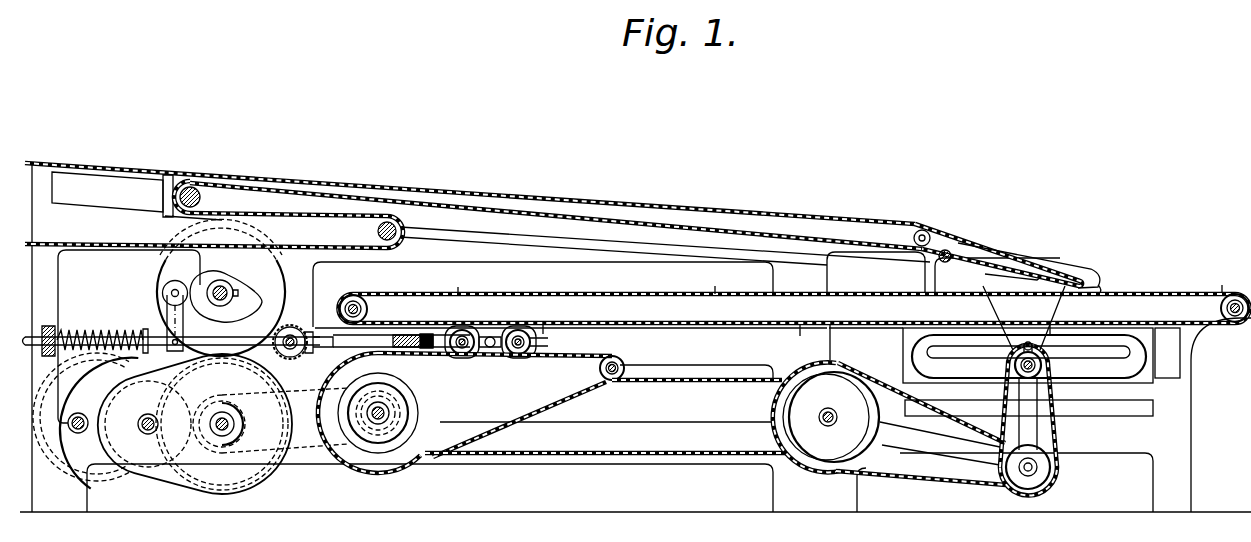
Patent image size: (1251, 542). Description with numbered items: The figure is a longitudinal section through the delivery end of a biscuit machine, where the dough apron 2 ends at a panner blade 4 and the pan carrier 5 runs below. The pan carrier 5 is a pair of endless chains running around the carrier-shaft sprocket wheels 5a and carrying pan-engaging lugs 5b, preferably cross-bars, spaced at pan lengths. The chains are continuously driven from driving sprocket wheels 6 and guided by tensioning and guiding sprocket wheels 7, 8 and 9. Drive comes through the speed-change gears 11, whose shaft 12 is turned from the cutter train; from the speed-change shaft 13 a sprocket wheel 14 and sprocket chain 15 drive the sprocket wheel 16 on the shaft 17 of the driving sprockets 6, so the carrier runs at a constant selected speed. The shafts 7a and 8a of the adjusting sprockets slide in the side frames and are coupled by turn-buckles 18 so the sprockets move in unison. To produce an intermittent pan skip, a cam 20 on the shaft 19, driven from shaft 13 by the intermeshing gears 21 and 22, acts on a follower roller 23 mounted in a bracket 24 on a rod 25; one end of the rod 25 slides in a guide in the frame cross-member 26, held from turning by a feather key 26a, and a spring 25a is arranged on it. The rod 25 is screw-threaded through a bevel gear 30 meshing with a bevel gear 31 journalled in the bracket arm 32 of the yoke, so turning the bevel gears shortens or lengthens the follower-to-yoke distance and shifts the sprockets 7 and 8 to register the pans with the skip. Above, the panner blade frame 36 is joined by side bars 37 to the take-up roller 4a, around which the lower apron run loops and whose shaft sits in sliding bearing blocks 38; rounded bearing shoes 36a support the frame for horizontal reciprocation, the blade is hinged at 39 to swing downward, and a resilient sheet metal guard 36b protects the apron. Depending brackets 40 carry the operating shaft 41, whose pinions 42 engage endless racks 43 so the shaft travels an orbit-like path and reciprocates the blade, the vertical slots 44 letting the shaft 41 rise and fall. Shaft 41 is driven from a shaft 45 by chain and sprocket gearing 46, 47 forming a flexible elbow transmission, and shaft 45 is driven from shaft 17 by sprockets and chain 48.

The dough apron 2 is at (98, 170).
The panner blade 4 is at (967, 243).
The take-up roller 4a is at (168, 214).
The pan carrier 5 is at (583, 294).
The carrier-shaft sprocket wheels 5a is at (368, 305).
The pan-engaging lugs 5b is at (460, 291).
The driving sprocket wheels 6 is at (375, 458).
The tensioning and guiding sprocket wheel 7 is at (464, 336).
The sprocket shaft 7a is at (460, 358).
The tensioning and guiding sprocket wheel 8 is at (524, 336).
The sprocket shaft 8a is at (514, 358).
The tensioning and guiding sprocket wheel 9 is at (630, 350).
The speed-change gears 11 is at (148, 482).
The shaft of the speed-change gears 12 is at (140, 426).
The shaft of the speed-change gears 13 is at (218, 430).
The sprocket wheel 14 is at (240, 418).
The sprocket chain 15 is at (288, 465).
The sprocket wheel 16 is at (340, 467).
The carrier driving shaft 17 is at (380, 420).
The turn-buckles 18 is at (497, 329).
The cam shaft 19 is at (214, 291).
The cam 20 is at (246, 285).
The gear 21 is at (150, 352).
The gear 22 is at (163, 292).
The follower roller 23 is at (172, 298).
The bracket 24 is at (183, 322).
The rod 25 is at (246, 344).
The spring 25a is at (140, 333).
The cross-member 26 is at (62, 330).
The feather key 26a is at (48, 330).
The bevel gear 30 is at (311, 330).
The bevel gear 31 is at (293, 313).
The bracket arm 32 is at (381, 362).
The panner blade frame 36 is at (1051, 258).
The rounded bearing shoes 36a is at (1101, 288).
The resilient sheet metal guard 36b is at (986, 282).
The side bars 37 is at (468, 226).
The sliding bearing blocks 38 is at (178, 187).
The hinge 39 is at (918, 246).
The depending brackets 40 is at (1003, 310).
The operating shaft 41 is at (1045, 385).
The pinions 42 is at (1012, 368).
The endless racks 43 is at (1130, 372).
The vertical slots 44 is at (1030, 348).
The shaft 45 is at (828, 427).
The chain and sprocket gearing 46 is at (955, 487).
The chain and sprocket gearing 47 is at (1055, 435).
The sprockets and chain 48 is at (682, 382).